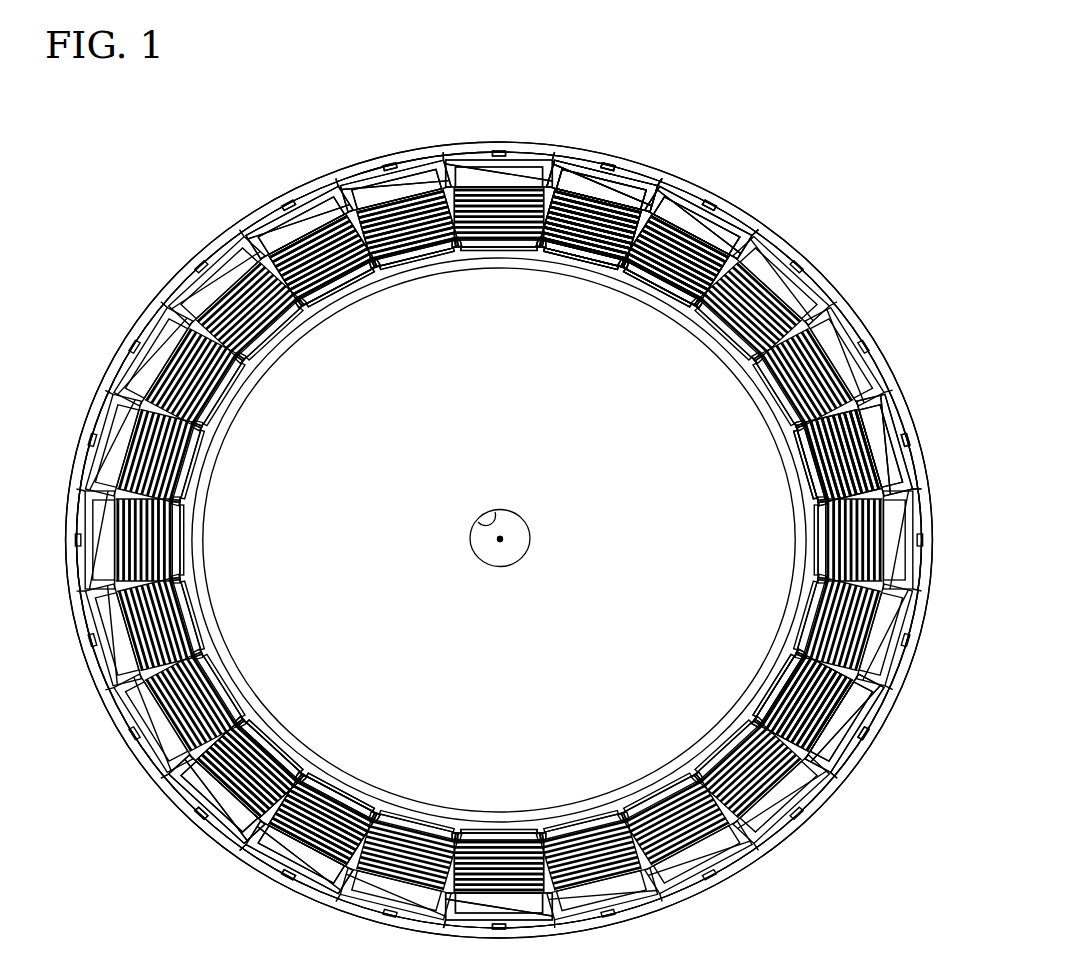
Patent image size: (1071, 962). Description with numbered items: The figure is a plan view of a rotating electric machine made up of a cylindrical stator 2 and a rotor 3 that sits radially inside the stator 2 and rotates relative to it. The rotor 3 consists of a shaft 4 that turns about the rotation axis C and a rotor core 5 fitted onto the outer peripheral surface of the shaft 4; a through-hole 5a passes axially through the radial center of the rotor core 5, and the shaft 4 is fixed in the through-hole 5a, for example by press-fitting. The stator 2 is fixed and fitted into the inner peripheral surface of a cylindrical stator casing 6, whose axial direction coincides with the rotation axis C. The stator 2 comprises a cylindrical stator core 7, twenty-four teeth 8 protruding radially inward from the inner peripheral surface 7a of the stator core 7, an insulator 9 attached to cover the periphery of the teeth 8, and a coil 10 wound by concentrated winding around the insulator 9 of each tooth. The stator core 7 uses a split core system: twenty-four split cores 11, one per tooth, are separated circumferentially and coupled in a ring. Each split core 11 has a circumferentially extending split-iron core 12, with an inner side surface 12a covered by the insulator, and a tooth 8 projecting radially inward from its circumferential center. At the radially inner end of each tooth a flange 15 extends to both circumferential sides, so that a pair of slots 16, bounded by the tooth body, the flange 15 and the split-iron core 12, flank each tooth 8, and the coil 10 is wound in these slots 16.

The stator 2 is at (830, 280).
The rotor 3 is at (769, 398).
The shaft 4 is at (513, 567).
The rotor core 5 is at (765, 682).
The through-hole 5a is at (477, 522).
The stator casing 6 is at (786, 239).
The stator core 7 is at (731, 212).
The inner peripheral surface 7a is at (676, 205).
The teeth 8 is at (595, 213).
The insulator 9 is at (577, 185).
The coil 10 is at (850, 456).
The split core 11 is at (135, 315).
The split-iron core 12 is at (418, 152).
The inner side surface 12a is at (380, 190).
The flange 15 is at (657, 292).
The slot 16 is at (302, 300).
The rotation axis C is at (503, 538).